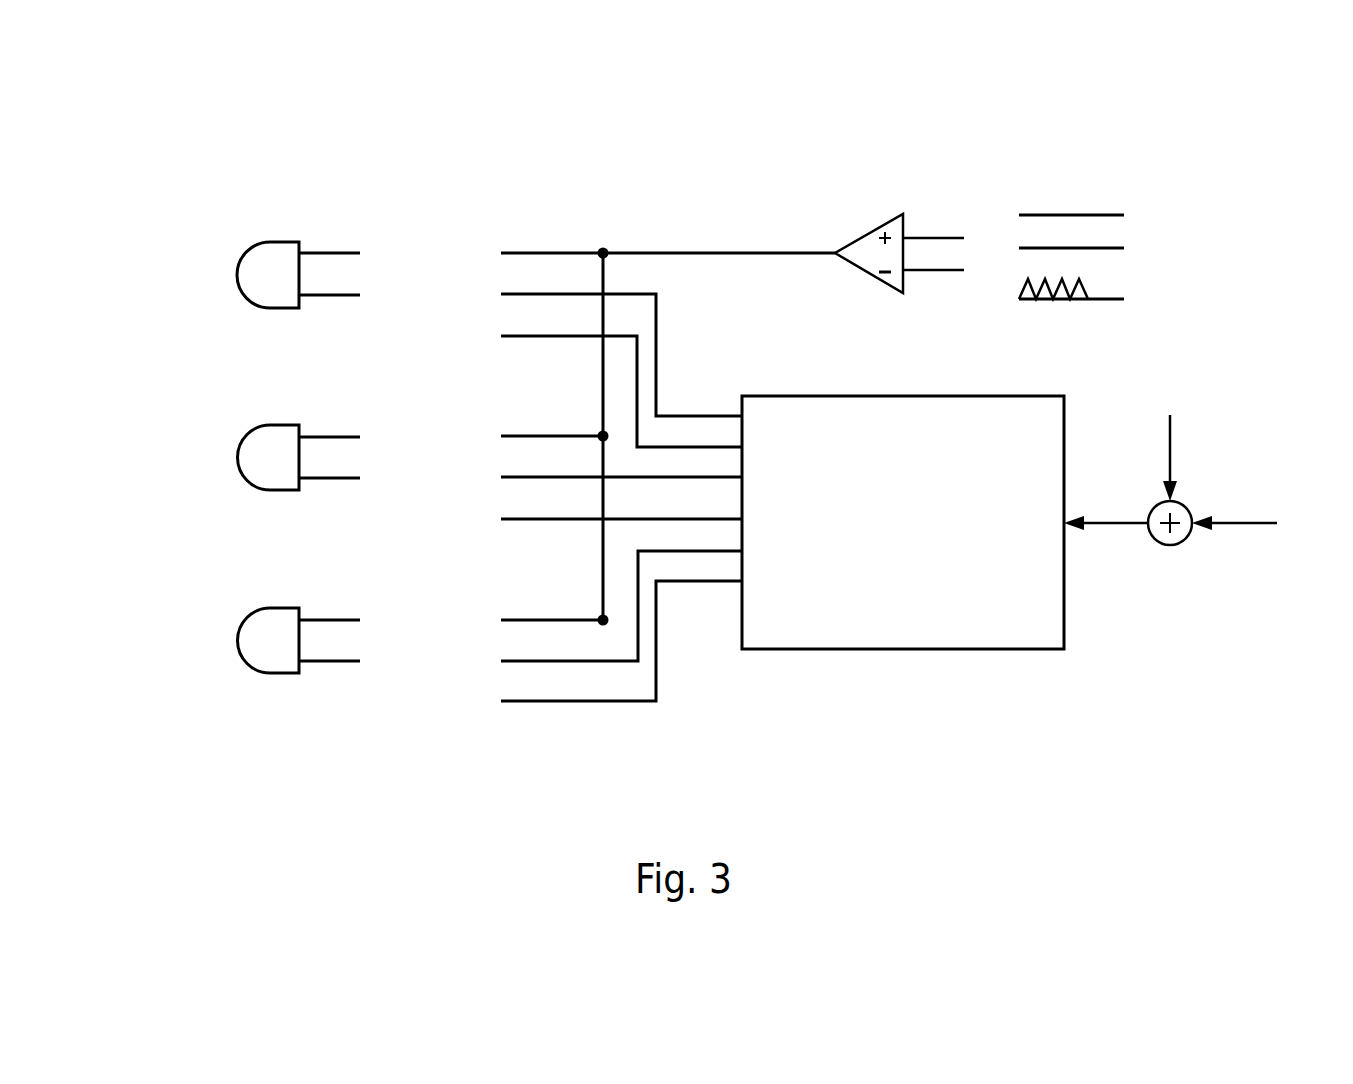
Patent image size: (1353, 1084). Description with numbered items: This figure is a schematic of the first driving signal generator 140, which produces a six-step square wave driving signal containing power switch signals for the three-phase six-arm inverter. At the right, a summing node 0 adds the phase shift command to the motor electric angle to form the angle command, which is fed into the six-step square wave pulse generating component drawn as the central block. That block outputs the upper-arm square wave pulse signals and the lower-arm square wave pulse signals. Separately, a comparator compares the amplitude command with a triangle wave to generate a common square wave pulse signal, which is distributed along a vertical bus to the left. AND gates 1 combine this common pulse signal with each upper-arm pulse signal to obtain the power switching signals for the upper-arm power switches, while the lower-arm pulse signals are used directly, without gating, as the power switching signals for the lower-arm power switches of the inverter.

The first driving signal generator 140 is at (1301, 123).
The DS1 gating signal inputs (DS1_aH, DS1_bH, DS1_cH) with AND gates 1 is at (237, 273).
The theta (θ) angle summing junction: θ shift + θe = θ com 0 is at (1191, 475).